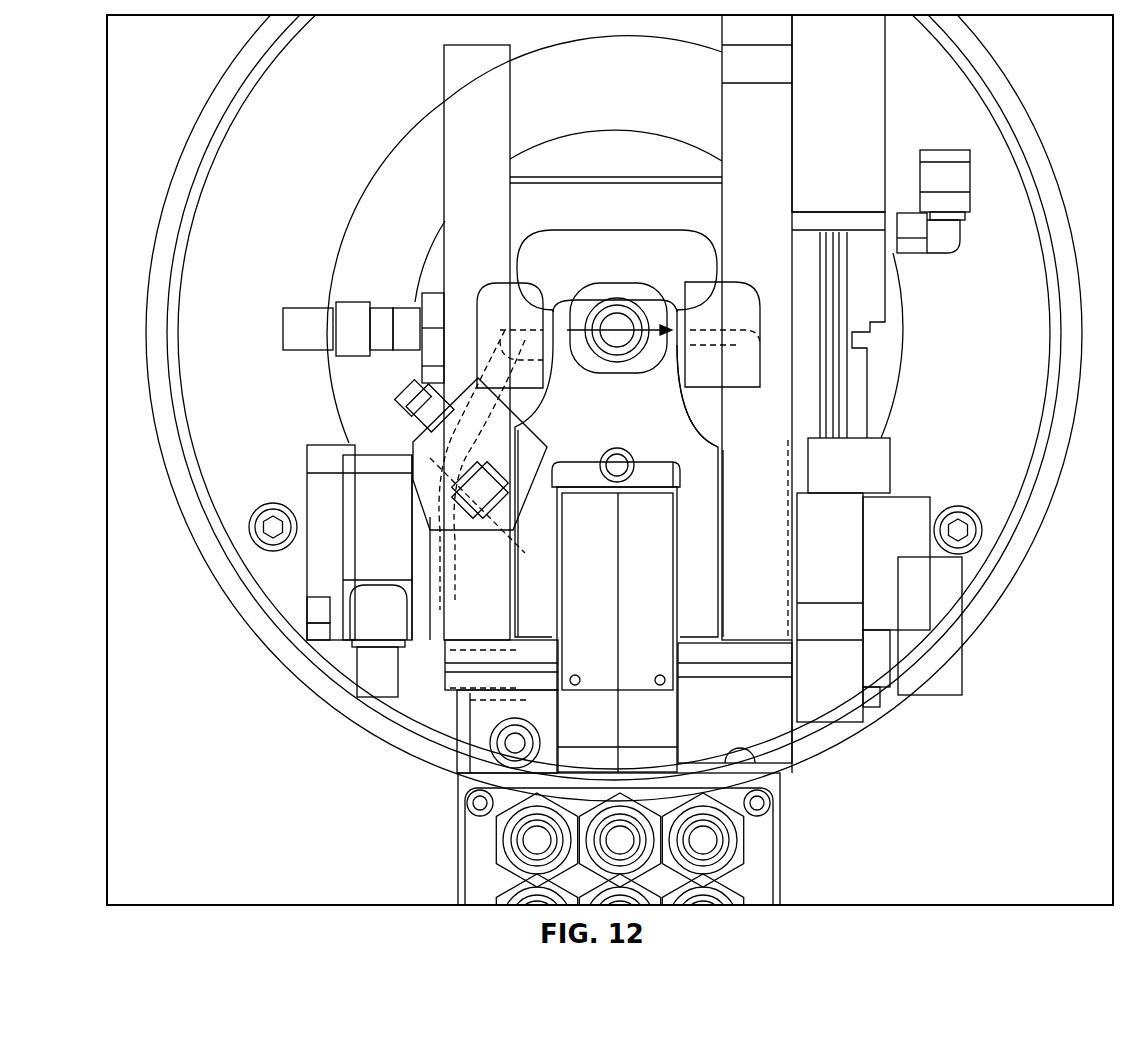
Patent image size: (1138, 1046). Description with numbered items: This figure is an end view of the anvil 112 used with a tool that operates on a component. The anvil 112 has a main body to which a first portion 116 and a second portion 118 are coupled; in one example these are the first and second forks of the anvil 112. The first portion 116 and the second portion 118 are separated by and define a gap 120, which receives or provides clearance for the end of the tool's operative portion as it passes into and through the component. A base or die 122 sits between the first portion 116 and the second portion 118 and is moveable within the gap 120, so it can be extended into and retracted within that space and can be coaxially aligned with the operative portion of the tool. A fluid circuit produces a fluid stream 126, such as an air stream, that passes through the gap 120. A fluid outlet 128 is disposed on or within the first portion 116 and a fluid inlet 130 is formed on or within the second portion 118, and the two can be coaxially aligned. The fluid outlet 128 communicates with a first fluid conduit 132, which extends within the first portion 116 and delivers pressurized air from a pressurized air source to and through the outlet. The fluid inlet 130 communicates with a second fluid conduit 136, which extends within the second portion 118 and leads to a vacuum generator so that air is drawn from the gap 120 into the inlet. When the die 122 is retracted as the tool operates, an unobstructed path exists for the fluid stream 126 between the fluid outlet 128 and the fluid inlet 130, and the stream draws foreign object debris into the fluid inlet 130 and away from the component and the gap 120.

The anvil 112 is at (1050, 636).
The first portion 116 is at (522, 282).
The second portion 118 is at (733, 297).
The gap 120 is at (592, 383).
The die 122 is at (628, 290).
The fluid stream 126 is at (617, 333).
The fluid outlet 128 is at (567, 283).
The fluid inlet 130 is at (668, 290).
The first fluid conduit 132 is at (470, 415).
The second fluid conduit 136 is at (745, 400).